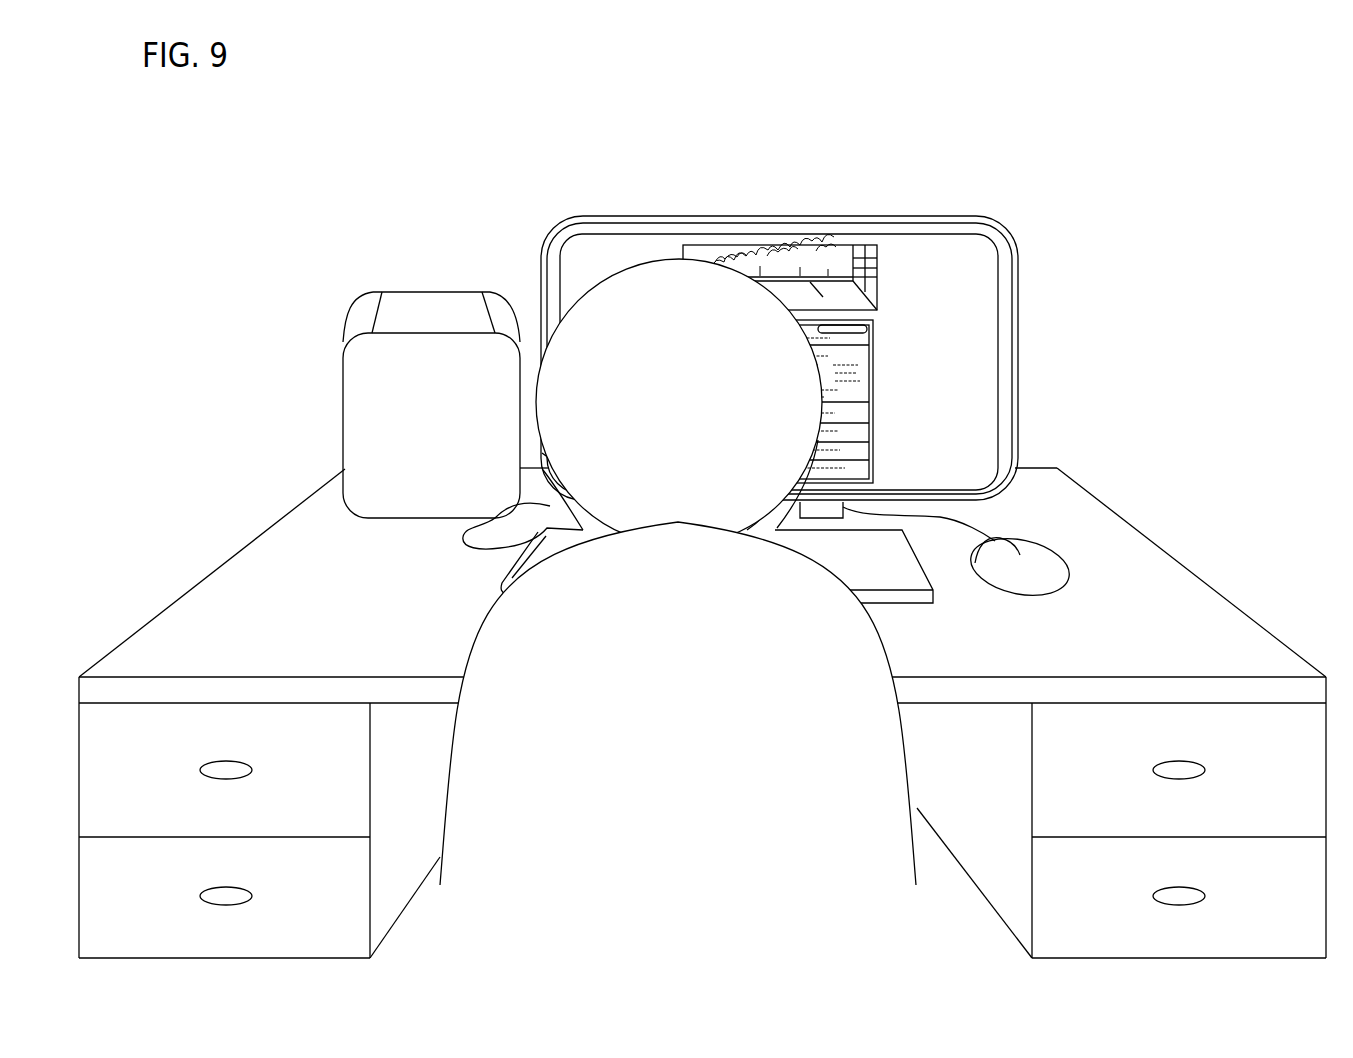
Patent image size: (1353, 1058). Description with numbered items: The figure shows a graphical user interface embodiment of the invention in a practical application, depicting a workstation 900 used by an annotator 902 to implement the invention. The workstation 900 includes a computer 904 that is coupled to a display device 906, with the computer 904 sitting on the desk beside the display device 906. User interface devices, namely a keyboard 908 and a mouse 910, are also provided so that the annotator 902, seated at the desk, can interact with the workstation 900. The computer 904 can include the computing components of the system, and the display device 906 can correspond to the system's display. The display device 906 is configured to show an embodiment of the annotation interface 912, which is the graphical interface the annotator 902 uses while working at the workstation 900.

The workstation 900 is at (636, 152).
The annotator 902 is at (700, 401).
The computer 904 is at (433, 310).
The display device 906 is at (1002, 245).
The keyboard 908 is at (890, 545).
The mouse 910 is at (1037, 567).
The annotation interface 912 is at (850, 247).